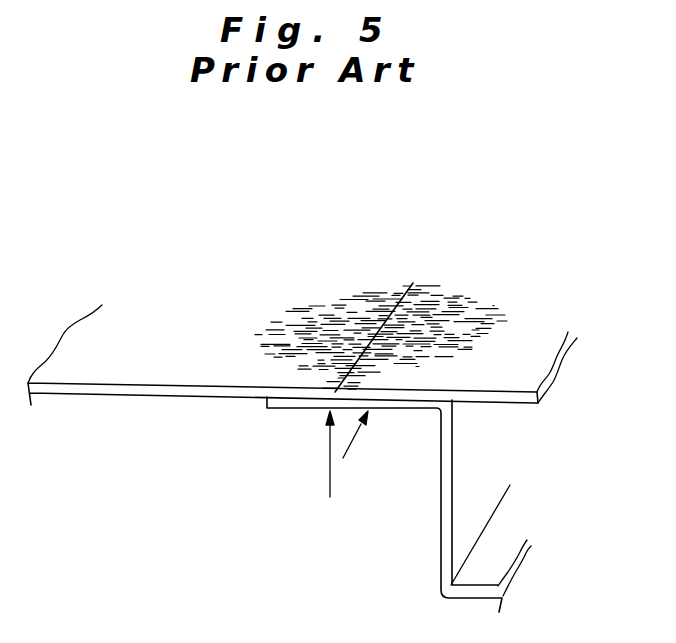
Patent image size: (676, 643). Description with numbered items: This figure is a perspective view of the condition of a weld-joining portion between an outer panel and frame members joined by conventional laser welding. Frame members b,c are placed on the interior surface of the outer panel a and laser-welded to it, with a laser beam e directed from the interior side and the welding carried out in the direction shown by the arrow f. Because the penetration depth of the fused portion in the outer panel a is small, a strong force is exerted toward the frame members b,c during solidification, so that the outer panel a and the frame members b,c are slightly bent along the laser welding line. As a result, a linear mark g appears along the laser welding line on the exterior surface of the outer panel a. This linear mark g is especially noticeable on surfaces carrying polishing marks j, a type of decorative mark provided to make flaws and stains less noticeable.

The outer panel a is at (178, 389).
The frame members b,c is at (445, 473).
The laser beam e is at (330, 468).
The laser welding direction f is at (360, 437).
The linear mark g is at (364, 347).
The polishing marks j is at (300, 333).